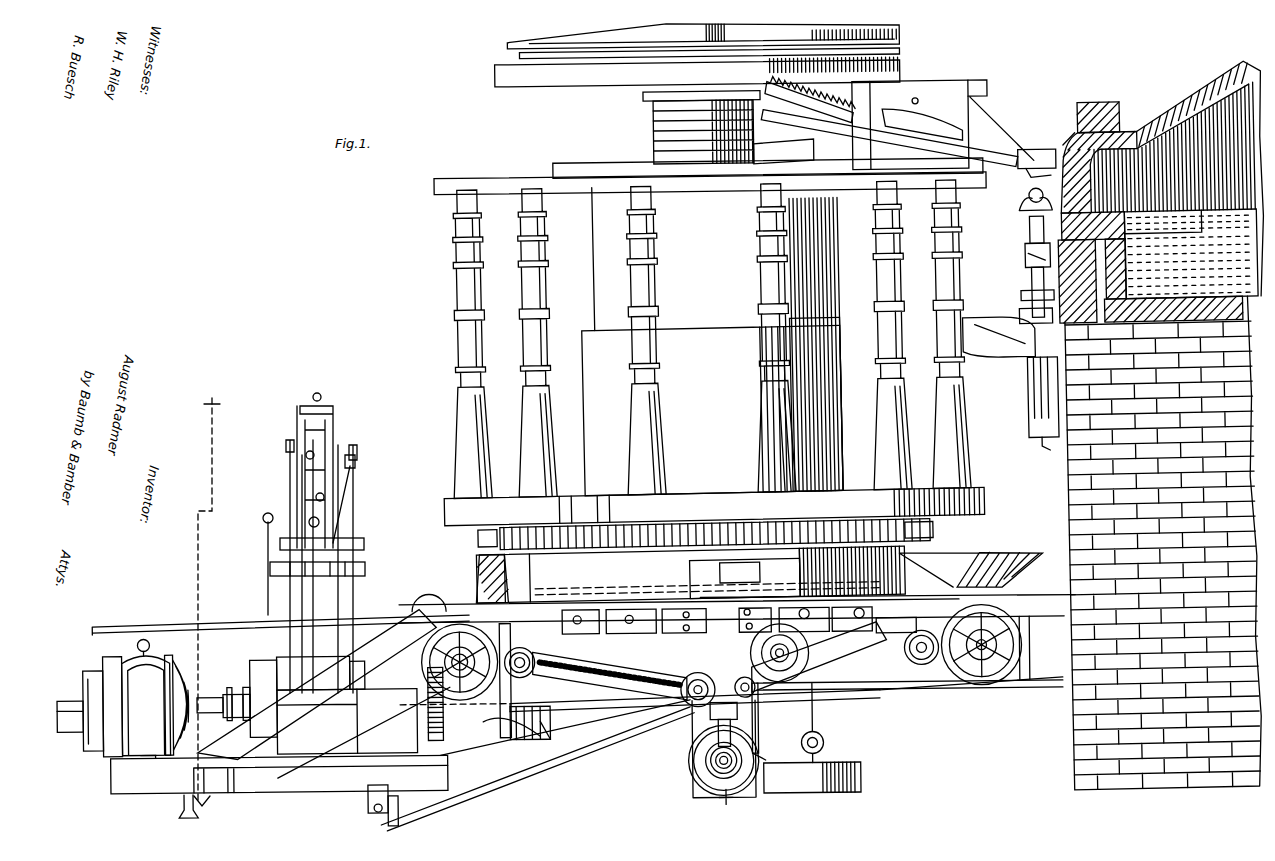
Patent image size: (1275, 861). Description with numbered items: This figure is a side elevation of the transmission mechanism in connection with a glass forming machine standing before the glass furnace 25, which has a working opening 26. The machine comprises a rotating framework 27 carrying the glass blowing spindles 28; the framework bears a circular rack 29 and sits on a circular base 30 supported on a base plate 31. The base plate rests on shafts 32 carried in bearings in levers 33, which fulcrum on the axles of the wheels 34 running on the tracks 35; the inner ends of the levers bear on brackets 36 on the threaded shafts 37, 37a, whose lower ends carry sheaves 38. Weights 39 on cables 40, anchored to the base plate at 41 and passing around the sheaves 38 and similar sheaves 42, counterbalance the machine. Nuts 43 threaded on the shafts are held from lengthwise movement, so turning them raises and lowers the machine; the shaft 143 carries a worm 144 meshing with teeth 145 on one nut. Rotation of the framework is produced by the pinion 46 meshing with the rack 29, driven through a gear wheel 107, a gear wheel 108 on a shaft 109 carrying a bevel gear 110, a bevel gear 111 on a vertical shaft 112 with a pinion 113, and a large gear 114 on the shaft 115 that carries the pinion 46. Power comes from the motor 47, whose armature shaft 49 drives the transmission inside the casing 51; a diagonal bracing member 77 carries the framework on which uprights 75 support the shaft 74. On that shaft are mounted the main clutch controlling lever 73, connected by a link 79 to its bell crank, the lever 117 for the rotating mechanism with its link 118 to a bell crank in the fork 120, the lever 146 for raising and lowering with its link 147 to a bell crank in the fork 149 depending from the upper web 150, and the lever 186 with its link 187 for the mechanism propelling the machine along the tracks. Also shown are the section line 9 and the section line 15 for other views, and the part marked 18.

The glass furnace 25 is at (1185, 110).
The working opening 26 is at (1082, 165).
The rotating framework 27 is at (985, 484).
The glass blowing spindles 28 is at (1030, 231).
The circular rack 29 is at (933, 529).
The circular base 30 is at (912, 567).
The base plate 31 is at (852, 571).
The shafts 32 is at (920, 645).
The wheels 34 is at (1023, 652).
The tracks 35 is at (932, 699).
The levers 33 is at (640, 704).
The cables 40 is at (760, 710).
The brackets 36 is at (690, 718).
The threaded shaft 37 is at (688, 763).
The sheaves 38 is at (700, 780).
The axle 15 is at (726, 808).
The weights 39 is at (852, 770).
The cable anchorage 41 is at (680, 664).
The sheaves 42 is at (802, 650).
The nuts 43 is at (700, 582).
The shaft 143 is at (625, 590).
The shaft 115 is at (522, 578).
The teeth 145 is at (745, 582).
The worm 144 is at (758, 528).
The threaded shaft 37a is at (705, 530).
The pinion 46 is at (478, 552).
The pinion 113 is at (610, 672).
The large gear 114 is at (610, 664).
The vertical shaft 112 is at (545, 698).
The bevel gear 111 is at (547, 722).
The shaft 109 is at (505, 744).
The bevel gear 110 is at (540, 742).
The gear wheel 108 is at (302, 791).
The gear wheel 107 is at (347, 721).
The diagonal bracing member 77 is at (322, 690).
The casing 51 is at (305, 762).
The rod end 18 is at (310, 798).
The motor 47 is at (133, 660).
The link 79 is at (210, 617).
The armature shaft 49 is at (228, 702).
The fork 149 is at (268, 675).
The upper web 150 is at (280, 628).
The fork 120 is at (360, 664).
The lever 186 is at (298, 460).
The lever 146 is at (288, 470).
The link 147 is at (290, 586).
The link 187 is at (300, 598).
The link 118 is at (356, 590).
The lever 117 is at (348, 460).
The shaft 74 is at (363, 546).
The uprights 75 is at (364, 570).
The main clutch controlling lever 73 is at (265, 540).
The section line 9 is at (207, 589).